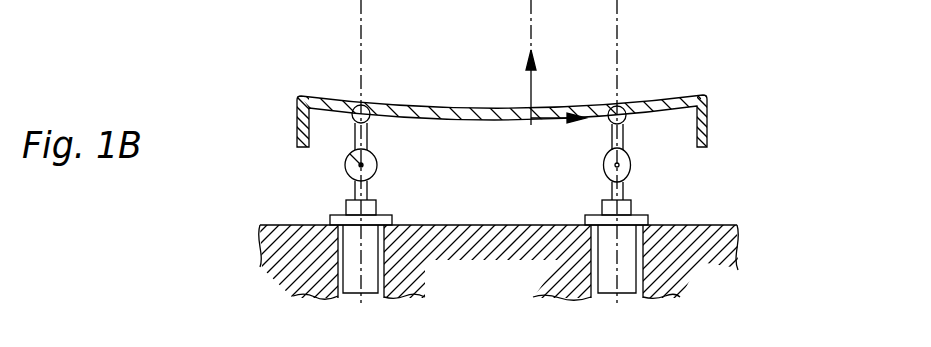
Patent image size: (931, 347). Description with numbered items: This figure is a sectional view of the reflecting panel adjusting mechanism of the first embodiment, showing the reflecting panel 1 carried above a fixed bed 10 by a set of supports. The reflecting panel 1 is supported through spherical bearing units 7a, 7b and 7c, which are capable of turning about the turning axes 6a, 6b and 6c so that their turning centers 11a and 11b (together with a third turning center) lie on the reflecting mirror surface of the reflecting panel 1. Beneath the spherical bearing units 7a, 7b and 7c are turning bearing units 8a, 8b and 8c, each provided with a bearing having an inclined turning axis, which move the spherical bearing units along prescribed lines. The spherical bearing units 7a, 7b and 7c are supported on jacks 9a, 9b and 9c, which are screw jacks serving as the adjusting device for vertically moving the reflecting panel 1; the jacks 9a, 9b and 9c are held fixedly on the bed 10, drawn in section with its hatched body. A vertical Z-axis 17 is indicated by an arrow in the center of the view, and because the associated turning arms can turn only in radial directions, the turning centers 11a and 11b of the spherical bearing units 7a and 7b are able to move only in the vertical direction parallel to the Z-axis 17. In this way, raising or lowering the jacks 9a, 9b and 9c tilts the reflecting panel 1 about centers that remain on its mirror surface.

The reflecting panel 1 is at (710, 122).
The turning axis 6a is at (615, 162).
The turning axis 6b is at (615, 162).
The turning axis 6c is at (310, 153).
The spherical bearing unit 7a is at (718, 85).
The spherical bearing unit 7b is at (718, 85).
The spherical bearing unit 7c is at (360, 103).
The turning bearing unit 8a is at (678, 164).
The turning bearing unit 8b is at (678, 164).
The turning bearing unit 8c is at (340, 171).
The jack 9a is at (679, 210).
The jack 9b is at (650, 218).
The jack 9c is at (330, 220).
The bed 10 is at (738, 248).
The turning center 11a is at (718, 85).
The turning center 11b is at (617, 105).
The Z-axis 17 is at (530, 65).